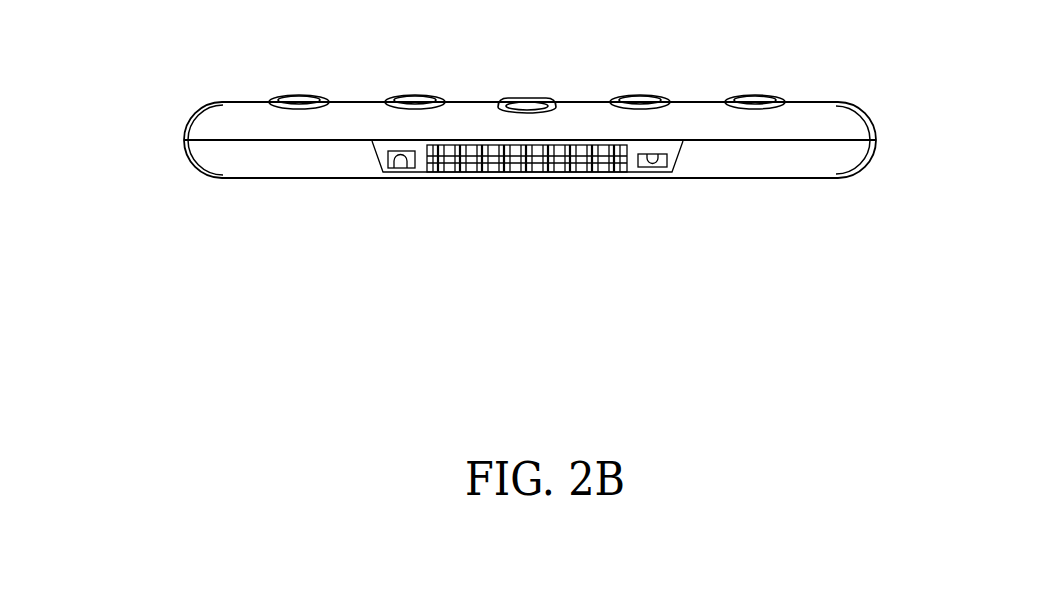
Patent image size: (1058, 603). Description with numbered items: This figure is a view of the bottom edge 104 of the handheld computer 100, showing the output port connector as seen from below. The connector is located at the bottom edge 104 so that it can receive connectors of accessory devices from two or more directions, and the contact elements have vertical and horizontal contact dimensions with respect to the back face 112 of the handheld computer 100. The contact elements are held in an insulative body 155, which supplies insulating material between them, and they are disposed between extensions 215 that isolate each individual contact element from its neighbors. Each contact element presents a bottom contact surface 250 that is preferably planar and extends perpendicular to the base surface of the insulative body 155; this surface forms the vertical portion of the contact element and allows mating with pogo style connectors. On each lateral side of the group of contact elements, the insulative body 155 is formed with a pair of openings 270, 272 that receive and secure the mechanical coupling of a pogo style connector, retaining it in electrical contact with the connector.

The handheld computer 100 is at (846, 74).
The bottom edge 104 is at (198, 164).
The back face 112 is at (753, 180).
The insulative body 155 is at (535, 183).
The extensions 215 is at (528, 172).
The bottom contact surface 250 is at (535, 208).
The opening 270 is at (405, 164).
The opening 272 is at (652, 160).